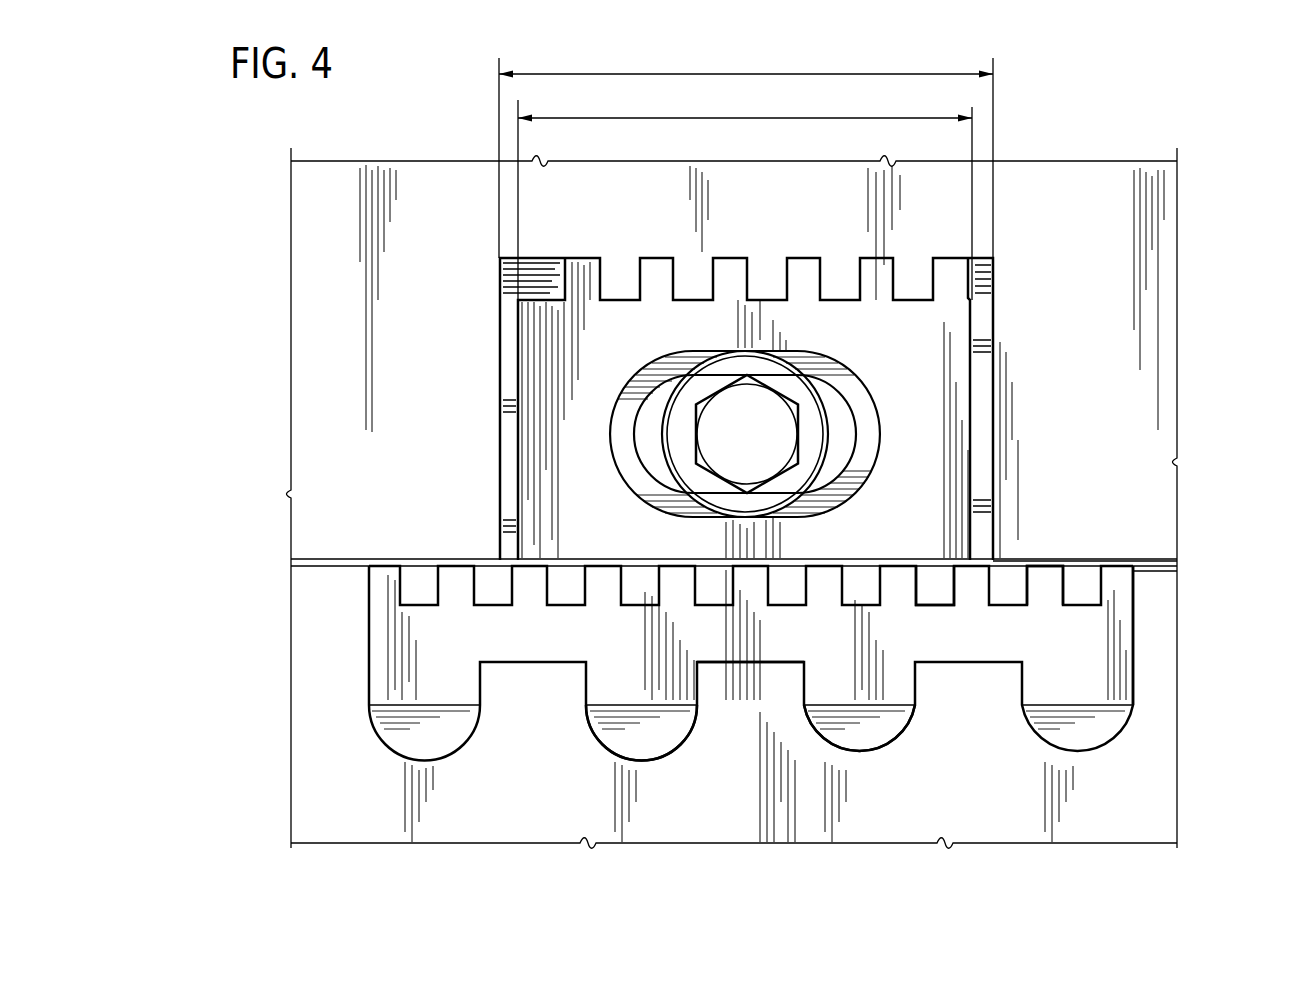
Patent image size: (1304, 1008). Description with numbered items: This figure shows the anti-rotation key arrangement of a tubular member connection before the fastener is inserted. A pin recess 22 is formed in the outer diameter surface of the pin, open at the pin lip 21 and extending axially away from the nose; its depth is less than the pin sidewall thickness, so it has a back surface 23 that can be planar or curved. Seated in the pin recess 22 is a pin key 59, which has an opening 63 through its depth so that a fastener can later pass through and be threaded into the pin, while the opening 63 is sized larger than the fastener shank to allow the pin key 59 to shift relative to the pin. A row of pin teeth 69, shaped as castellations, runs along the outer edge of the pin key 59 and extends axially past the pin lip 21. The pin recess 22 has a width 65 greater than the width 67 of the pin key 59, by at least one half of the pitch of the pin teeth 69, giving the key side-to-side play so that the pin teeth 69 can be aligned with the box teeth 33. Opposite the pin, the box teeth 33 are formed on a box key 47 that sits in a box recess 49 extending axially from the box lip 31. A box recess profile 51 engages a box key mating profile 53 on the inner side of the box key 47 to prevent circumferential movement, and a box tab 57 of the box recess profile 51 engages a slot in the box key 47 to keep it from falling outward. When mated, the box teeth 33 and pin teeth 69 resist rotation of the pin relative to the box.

The pin lip 21 is at (317, 568).
The pin recess 22 is at (988, 298).
The back surface 23 is at (535, 272).
The box lip 31 is at (1165, 545).
The box teeth 33 is at (1045, 573).
The box key 47 is at (403, 673).
The box recess 49 is at (1125, 640).
The box recess profile 51 is at (803, 682).
The box key mating profile 53 is at (618, 688).
The box tab 57 is at (745, 680).
The pin key 59 is at (952, 403).
The opening 63 is at (748, 390).
The width 65 is at (692, 73).
The width 67 is at (790, 117).
The pin teeth 69 is at (936, 607).